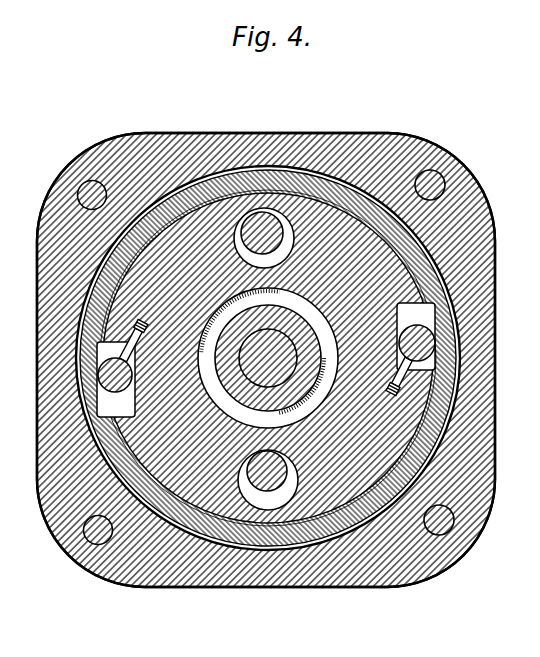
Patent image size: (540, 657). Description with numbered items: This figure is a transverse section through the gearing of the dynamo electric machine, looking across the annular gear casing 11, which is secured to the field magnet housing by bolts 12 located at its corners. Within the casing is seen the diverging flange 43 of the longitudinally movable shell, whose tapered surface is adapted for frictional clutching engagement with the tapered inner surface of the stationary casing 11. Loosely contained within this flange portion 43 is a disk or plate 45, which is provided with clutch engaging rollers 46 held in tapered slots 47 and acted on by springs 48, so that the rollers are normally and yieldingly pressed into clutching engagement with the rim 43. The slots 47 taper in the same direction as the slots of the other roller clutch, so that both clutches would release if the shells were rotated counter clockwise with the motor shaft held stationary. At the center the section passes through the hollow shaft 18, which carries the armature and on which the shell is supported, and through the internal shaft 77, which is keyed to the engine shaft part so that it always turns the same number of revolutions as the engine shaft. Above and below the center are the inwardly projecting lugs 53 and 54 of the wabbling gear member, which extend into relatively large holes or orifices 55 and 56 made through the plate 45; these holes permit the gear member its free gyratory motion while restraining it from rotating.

The gear casing 11 is at (281, 135).
The bolts 12 is at (95, 546).
The diverging flange 43 is at (379, 137).
The disk or plate 45 is at (405, 252).
The clutch engaging rollers 46 is at (425, 340).
The slots 47 is at (420, 303).
The springs 48 is at (400, 388).
The inwardly projecting lug 53 is at (270, 222).
The inwardly projecting lug 54 is at (275, 492).
The hole or orifice 55 is at (231, 200).
The hole or orifice 56 is at (258, 497).
The hollow shaft 18 is at (307, 340).
The internal shaft 77 is at (303, 400).